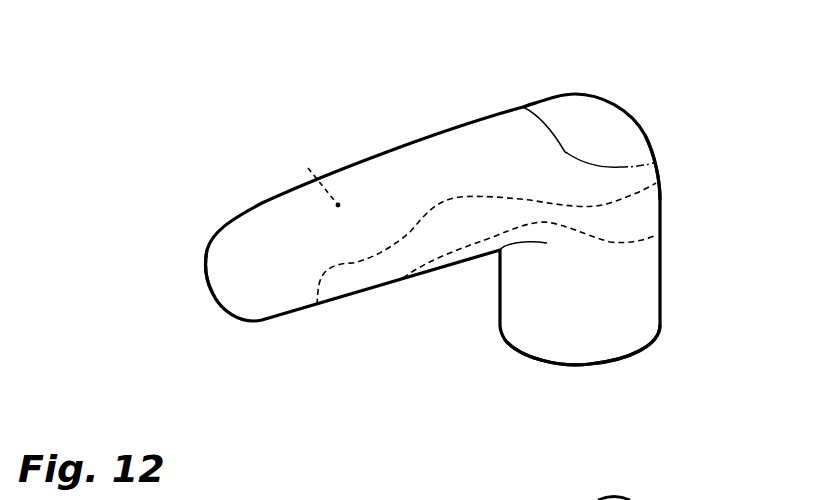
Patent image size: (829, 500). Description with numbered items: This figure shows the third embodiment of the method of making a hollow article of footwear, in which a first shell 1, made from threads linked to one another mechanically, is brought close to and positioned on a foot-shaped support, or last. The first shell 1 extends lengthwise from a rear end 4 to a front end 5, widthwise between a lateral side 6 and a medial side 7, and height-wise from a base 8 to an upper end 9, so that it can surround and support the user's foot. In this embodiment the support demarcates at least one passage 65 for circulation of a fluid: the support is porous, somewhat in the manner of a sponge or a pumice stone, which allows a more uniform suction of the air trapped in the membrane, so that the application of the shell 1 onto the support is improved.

The first shell 1 is at (416, 134).
The rear end 4 is at (643, 128).
The front end 5 is at (210, 288).
The lateral side 6 is at (308, 168).
The medial side 7 is at (368, 228).
The base 8 is at (488, 128).
The upper end 9 is at (627, 353).
The passage 65 is at (451, 483).